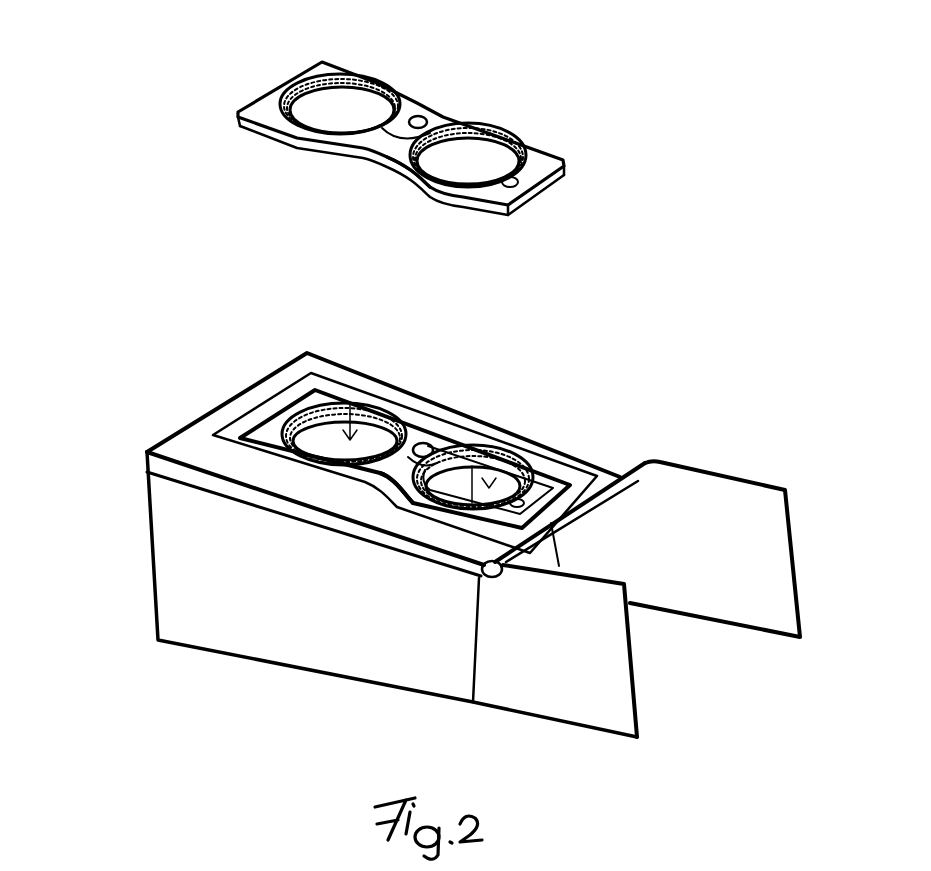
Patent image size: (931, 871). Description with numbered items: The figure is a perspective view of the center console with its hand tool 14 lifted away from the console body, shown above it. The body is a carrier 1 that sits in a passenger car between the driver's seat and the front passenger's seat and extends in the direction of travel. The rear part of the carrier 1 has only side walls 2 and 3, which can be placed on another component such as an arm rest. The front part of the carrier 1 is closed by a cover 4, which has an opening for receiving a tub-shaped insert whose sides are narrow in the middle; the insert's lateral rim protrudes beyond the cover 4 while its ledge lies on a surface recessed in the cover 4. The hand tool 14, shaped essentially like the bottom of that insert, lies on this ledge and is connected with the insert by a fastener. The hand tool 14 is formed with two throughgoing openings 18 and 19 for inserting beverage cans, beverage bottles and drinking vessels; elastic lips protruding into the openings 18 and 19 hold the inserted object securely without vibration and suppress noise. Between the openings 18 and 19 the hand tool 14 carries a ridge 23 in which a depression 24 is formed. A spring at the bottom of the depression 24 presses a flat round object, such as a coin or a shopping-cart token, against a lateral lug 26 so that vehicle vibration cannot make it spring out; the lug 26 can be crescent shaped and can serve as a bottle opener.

The carrier 1 is at (128, 532).
The side wall 2 is at (615, 662).
The side wall 3 is at (767, 560).
The cover 4 is at (197, 440).
The hand tool 14 is at (230, 116).
The throughgoing opening 18 is at (347, 117).
The throughgoing opening 19 is at (469, 163).
The ridge 23 is at (448, 434).
The depression 24 is at (416, 117).
The lateral lug 26 is at (387, 160).